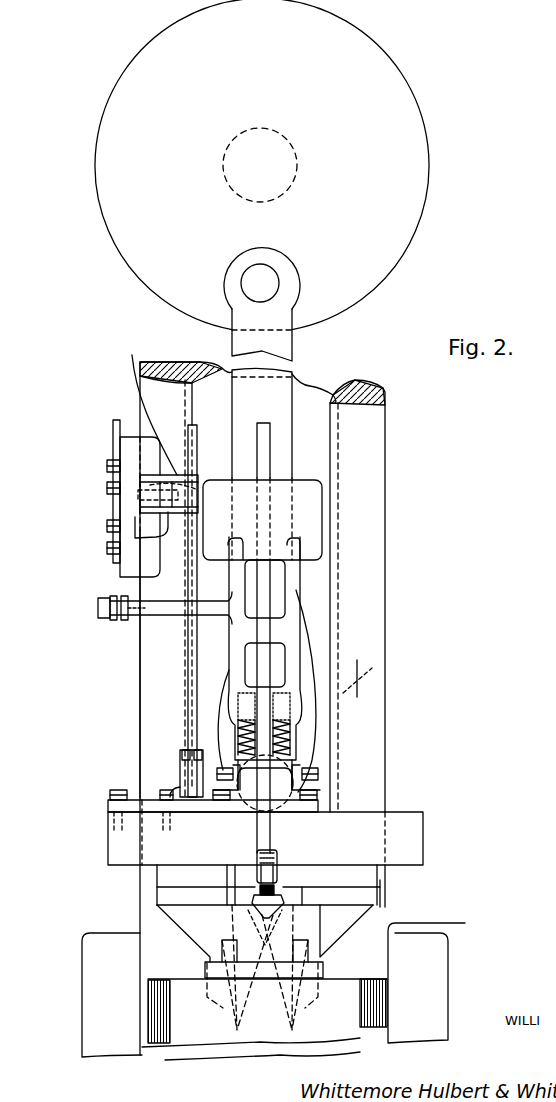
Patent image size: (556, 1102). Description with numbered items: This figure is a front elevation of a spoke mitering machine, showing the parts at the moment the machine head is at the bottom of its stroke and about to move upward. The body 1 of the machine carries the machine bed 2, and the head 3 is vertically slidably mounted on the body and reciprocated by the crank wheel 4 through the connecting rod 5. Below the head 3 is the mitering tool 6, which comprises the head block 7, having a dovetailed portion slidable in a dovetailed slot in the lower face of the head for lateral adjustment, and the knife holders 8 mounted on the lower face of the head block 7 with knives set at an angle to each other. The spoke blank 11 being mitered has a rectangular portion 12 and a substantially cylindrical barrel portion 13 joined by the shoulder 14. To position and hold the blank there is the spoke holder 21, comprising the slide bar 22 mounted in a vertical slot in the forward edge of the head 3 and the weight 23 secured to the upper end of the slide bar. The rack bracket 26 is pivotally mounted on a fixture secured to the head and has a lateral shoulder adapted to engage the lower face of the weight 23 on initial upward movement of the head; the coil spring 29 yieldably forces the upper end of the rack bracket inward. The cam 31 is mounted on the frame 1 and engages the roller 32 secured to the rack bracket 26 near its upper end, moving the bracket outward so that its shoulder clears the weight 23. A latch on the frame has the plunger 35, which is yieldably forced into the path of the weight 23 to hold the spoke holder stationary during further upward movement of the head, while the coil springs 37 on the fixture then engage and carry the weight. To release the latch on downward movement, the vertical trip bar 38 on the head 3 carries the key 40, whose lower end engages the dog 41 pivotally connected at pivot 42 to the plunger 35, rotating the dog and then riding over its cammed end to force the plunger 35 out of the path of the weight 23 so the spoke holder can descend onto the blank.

The body 1 is at (373, 422).
The machine bed 2 is at (180, 1030).
The head 3 is at (400, 820).
The crank wheel 4 is at (417, 177).
The connecting rod 5 is at (282, 342).
The mitering tool 6 is at (310, 925).
The head block 7 is at (373, 898).
The knife holders 8 is at (370, 873).
The spoke blank 11 is at (255, 860).
The rectangular portion 12 is at (275, 876).
The barrel portion 13 is at (290, 876).
The shoulder 14 is at (270, 896).
The spoke holder 21 is at (265, 608).
The slide bar 22 is at (264, 827).
The weight 23 is at (305, 490).
The rack bracket 26 is at (290, 640).
The coil spring 29 is at (305, 680).
The cam 31 is at (113, 440).
The roller 32 is at (110, 598).
The plunger 35 is at (197, 490).
The coil springs 37 is at (238, 740).
The trip bar 38 is at (193, 642).
The key 40 is at (188, 657).
The dog 41 is at (140, 435).
The pivot 42 is at (130, 502).